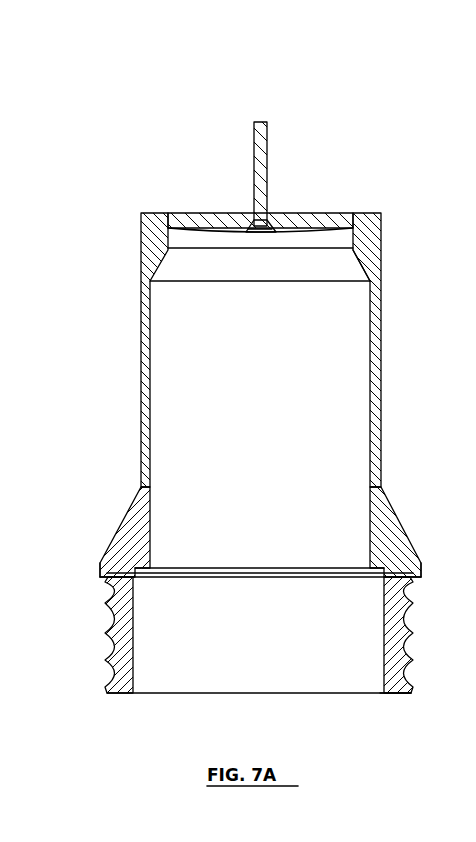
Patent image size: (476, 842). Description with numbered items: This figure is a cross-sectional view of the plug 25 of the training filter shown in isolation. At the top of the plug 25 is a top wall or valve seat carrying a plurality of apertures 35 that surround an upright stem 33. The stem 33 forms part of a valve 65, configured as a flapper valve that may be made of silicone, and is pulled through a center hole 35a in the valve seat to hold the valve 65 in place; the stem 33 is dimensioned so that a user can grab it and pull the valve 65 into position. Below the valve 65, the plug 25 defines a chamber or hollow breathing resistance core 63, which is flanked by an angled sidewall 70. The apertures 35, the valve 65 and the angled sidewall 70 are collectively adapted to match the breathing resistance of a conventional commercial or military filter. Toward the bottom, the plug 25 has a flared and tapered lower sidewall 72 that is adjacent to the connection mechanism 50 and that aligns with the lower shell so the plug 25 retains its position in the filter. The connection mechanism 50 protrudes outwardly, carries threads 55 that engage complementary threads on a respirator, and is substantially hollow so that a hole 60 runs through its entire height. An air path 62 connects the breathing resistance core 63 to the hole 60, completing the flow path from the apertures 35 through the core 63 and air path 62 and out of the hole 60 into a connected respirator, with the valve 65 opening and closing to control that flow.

The plug 25 is at (385, 330).
The stem 33 is at (254, 143).
The apertures 35 is at (192, 222).
The center hole 35a is at (258, 217).
The valve 65 is at (252, 230).
The angled sidewall 70 is at (359, 263).
The hollow breathing resistance core 63 is at (223, 330).
The lower sidewall 72 is at (138, 547).
The hole 60 is at (280, 643).
The air path 62 is at (212, 527).
The threads 55 is at (409, 667).
The connection mechanism 50 is at (395, 699).